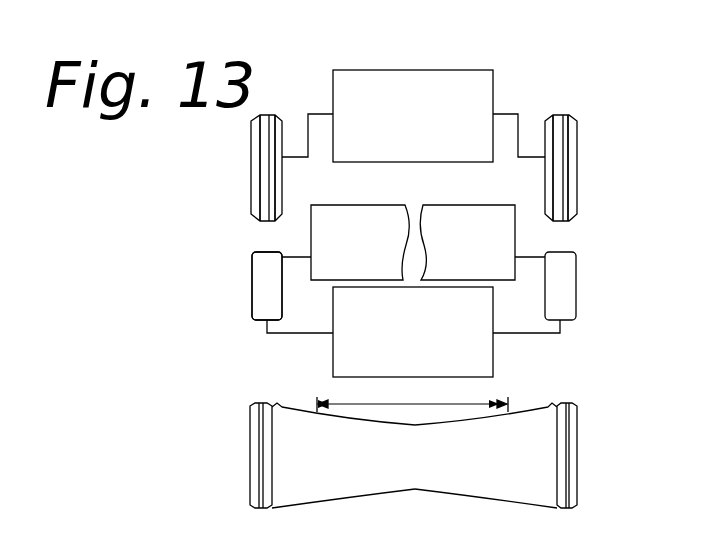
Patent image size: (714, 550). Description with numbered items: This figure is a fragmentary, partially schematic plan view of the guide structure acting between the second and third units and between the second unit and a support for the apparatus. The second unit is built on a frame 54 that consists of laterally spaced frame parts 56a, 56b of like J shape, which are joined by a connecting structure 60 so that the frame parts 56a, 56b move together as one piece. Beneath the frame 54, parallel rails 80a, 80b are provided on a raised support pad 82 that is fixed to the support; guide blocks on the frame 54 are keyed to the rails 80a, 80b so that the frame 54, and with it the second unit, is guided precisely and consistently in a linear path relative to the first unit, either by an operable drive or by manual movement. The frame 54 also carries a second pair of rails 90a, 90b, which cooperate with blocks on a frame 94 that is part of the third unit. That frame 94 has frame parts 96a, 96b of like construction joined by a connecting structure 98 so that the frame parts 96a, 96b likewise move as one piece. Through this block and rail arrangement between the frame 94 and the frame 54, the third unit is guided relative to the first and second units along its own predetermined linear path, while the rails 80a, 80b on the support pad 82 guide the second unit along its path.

The frame 54 is at (510, 93).
The connecting structure 60 is at (425, 150).
The connecting structure 98 is at (425, 368).
The frame part 56a is at (251, 151).
The frame part 56b is at (577, 184).
The rail 90a is at (270, 146).
The rail 90b is at (565, 157).
The frame 94 is at (256, 294).
The frame part 96a is at (252, 255).
The frame part 96b is at (577, 265).
The raised support pad 82 is at (250, 440).
The rail 80a is at (273, 450).
The rail 80b is at (563, 465).